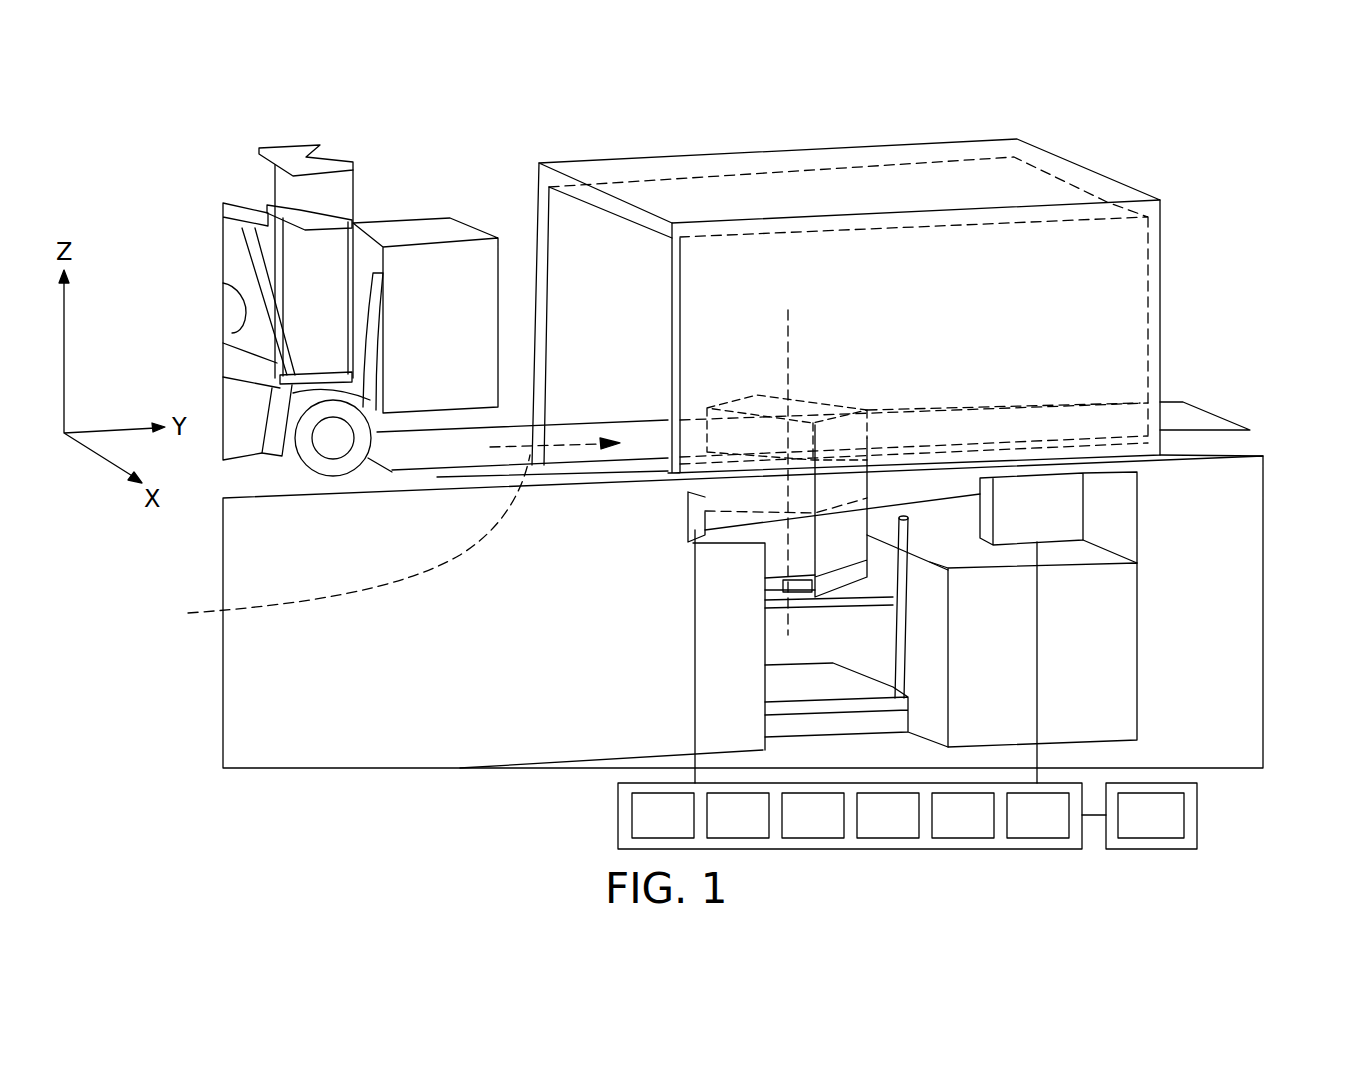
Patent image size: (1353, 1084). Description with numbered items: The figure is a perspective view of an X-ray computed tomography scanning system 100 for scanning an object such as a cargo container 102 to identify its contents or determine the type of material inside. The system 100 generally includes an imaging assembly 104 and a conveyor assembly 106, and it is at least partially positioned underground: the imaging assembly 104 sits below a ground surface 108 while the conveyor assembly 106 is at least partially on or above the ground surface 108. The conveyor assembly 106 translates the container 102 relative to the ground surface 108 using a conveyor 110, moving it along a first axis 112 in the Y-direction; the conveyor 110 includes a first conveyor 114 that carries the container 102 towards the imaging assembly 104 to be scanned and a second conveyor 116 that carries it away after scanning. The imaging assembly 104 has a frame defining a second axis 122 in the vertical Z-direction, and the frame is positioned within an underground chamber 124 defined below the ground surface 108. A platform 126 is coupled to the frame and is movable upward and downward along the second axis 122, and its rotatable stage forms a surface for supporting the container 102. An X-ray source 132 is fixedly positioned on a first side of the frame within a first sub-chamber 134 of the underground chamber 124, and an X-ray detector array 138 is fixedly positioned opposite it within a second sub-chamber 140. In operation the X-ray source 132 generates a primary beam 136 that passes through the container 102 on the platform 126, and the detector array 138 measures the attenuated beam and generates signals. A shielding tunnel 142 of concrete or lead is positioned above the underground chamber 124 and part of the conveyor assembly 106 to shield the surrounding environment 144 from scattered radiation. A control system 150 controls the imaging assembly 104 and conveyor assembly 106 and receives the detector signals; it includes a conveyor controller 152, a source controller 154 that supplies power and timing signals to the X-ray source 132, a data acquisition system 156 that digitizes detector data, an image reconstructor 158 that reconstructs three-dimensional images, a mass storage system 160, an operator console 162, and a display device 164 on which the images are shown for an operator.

The X-ray computed tomography (CT) scanning system 100 is at (1193, 380).
The cargo container 102 is at (843, 407).
The imaging assembly 104 is at (1175, 512).
The conveyor assembly 106 is at (437, 477).
The ground surface 108 is at (1263, 455).
The conveyor 110 is at (1227, 420).
The first axis 112 is at (378, 538).
The first conveyor 114 is at (585, 423).
The second conveyor 116 is at (1053, 407).
The second axis 122 is at (788, 347).
The underground chamber 124 is at (913, 647).
The platform 126 is at (763, 605).
The X-ray source 132 is at (1065, 519).
The first sub-chamber 134 is at (1073, 548).
The primary beam 136 is at (722, 537).
The X-ray detector array 138 is at (688, 517).
The second sub-chamber 140 is at (706, 498).
The shielding tunnel 142 is at (730, 207).
The environment 144 is at (1207, 298).
The control system 150 is at (582, 820).
The conveyor controller 152 is at (685, 828).
The source controller 154 is at (760, 828).
The data acquisition system (DAS) 156 is at (835, 828).
The image reconstructor 158 is at (910, 828).
The mass storage system 160 is at (985, 828).
The operator console 162 is at (1060, 828).
The display device 164 is at (1198, 815).